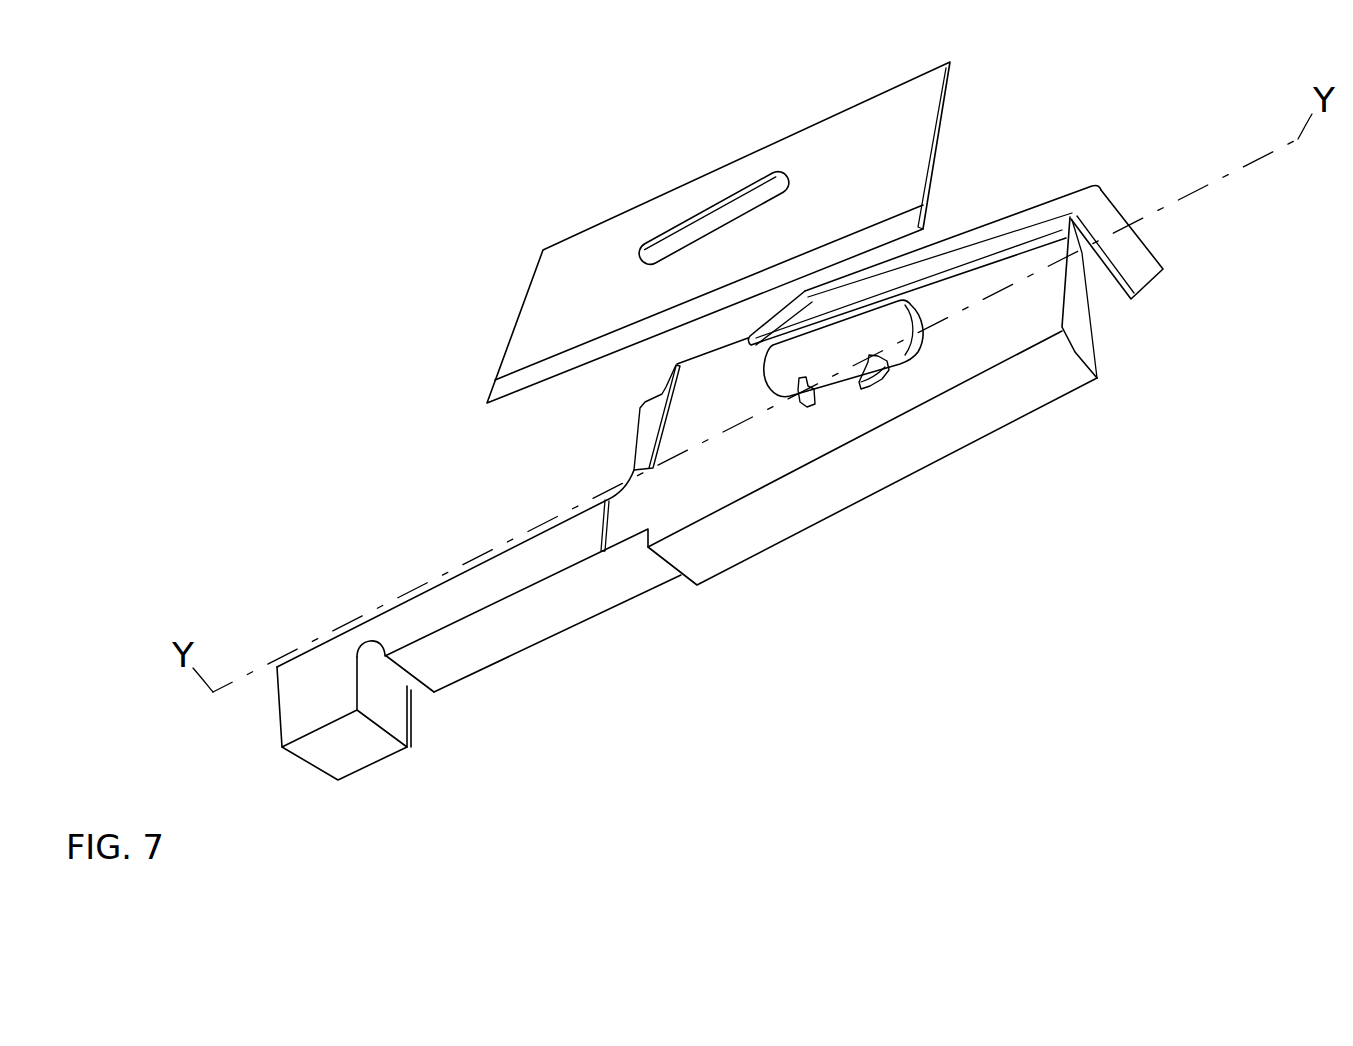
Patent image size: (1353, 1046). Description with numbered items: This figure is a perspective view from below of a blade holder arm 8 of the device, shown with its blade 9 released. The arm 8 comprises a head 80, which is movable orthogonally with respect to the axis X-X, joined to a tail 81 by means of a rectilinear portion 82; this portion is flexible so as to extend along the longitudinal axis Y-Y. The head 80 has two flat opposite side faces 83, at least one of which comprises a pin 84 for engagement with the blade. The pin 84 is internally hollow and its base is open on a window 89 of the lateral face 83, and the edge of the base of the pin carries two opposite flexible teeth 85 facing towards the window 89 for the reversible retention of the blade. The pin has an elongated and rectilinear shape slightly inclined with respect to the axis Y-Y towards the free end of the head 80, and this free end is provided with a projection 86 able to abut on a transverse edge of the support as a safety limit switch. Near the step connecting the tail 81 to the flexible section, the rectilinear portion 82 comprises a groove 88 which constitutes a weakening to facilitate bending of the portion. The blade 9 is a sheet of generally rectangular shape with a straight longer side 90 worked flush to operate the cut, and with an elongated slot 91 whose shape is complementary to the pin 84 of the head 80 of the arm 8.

The holder arm 8 is at (388, 485).
The blade 9 is at (536, 244).
The head 80 is at (1065, 433).
The tail 81 is at (317, 645).
The rectilinear portion 82 is at (534, 654).
The side faces 83 is at (1031, 268).
The pin 84 is at (912, 338).
The flexible teeth 85 is at (820, 385).
The projection 86 is at (1115, 212).
The groove 88 is at (407, 684).
The window 89 is at (850, 387).
The straight longer side 90 is at (548, 370).
The elongated slot 91 is at (720, 224).